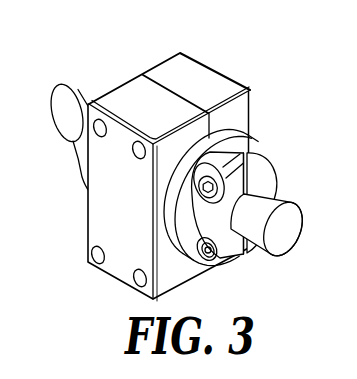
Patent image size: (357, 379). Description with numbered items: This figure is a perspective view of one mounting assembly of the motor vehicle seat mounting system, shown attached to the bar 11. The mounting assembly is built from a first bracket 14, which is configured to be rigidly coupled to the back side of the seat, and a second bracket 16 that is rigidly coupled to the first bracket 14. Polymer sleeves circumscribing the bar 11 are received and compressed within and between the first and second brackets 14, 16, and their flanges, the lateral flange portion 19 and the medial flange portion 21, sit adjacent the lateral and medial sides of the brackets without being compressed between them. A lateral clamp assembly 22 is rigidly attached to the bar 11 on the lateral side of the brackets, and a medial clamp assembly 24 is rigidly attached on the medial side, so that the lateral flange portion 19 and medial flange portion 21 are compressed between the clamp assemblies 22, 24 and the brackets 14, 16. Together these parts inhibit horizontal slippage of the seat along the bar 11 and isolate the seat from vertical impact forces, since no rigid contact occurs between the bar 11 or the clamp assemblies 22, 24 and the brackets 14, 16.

The bar 11 is at (283, 235).
The first bracket 14 is at (195, 75).
The second bracket 16 is at (107, 220).
The lateral flange portion 19 is at (83, 182).
The medial flange portion 21 is at (247, 145).
The lateral clamp assembly 22 is at (78, 153).
The medial clamp assembly 24 is at (270, 187).